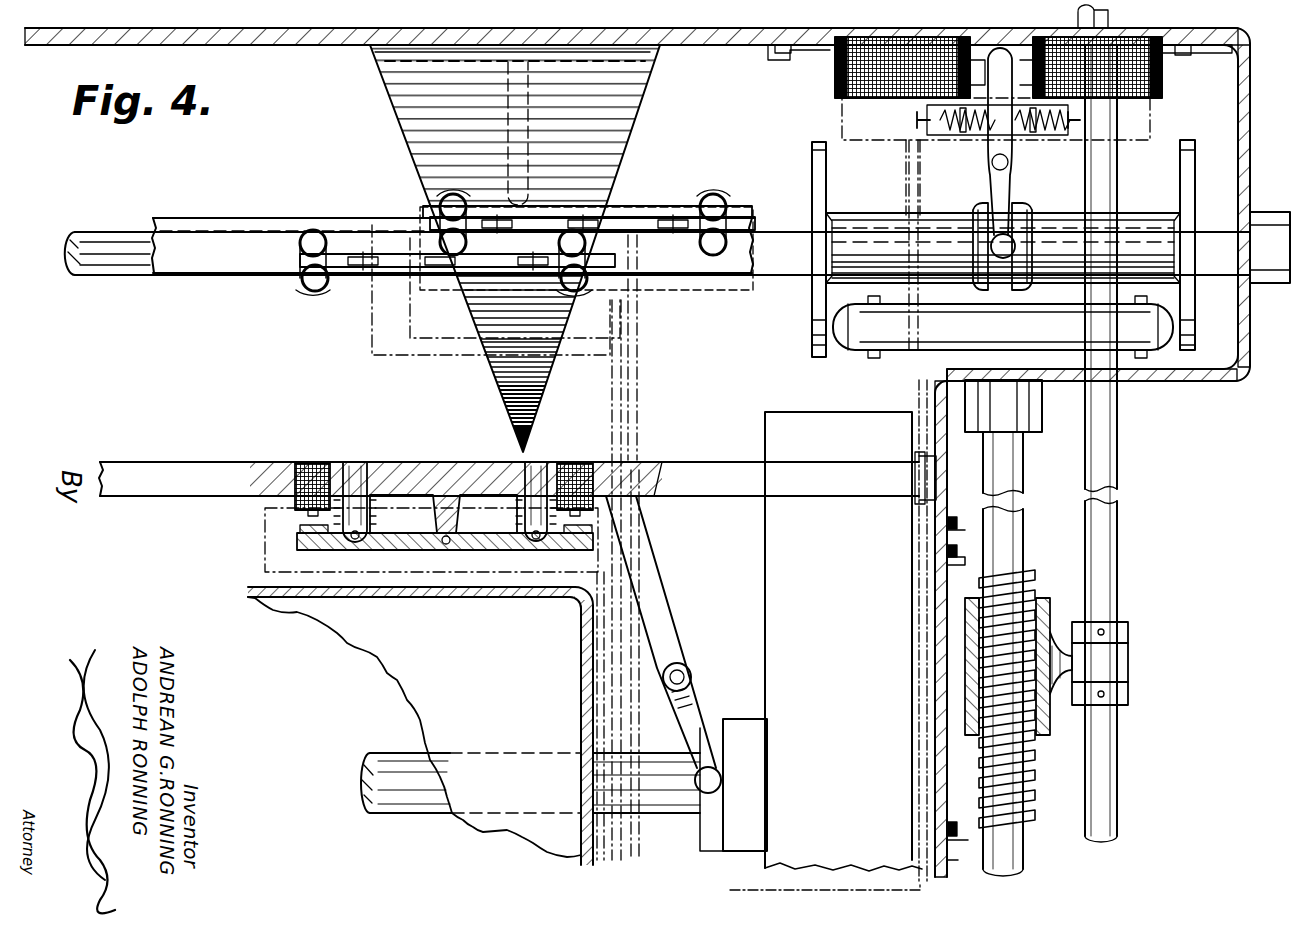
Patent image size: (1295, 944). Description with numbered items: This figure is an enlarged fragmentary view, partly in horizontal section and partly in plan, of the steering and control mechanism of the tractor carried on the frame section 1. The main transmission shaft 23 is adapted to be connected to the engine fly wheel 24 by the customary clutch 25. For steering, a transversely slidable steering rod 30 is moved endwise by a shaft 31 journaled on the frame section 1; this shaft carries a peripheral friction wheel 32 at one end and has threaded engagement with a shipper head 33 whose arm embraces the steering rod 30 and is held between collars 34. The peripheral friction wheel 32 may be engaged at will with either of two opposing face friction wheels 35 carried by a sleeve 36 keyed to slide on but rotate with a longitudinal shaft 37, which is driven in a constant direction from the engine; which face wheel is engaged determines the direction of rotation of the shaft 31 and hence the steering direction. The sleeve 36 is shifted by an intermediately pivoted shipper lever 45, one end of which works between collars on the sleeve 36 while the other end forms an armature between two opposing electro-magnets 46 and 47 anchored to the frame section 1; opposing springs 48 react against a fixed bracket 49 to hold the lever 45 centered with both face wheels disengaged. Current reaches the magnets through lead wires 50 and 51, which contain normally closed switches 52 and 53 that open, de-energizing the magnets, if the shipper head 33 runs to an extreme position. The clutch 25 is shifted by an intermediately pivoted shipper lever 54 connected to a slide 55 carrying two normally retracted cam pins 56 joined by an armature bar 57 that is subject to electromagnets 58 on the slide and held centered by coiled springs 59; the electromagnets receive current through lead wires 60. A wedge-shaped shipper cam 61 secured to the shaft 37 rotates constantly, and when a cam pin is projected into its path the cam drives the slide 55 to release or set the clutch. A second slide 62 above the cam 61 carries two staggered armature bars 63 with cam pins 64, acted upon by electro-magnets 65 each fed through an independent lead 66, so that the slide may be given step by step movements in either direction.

The upper frame section 1 is at (1183, 382).
The main transmission shaft 23 is at (385, 795).
The engine fly wheel 24 is at (790, 563).
The clutch 25 is at (740, 735).
The steering rod 30 is at (1110, 812).
The shaft 31 is at (1014, 538).
The peripheral friction wheel 32 is at (875, 320).
The shipper head 33 is at (1112, 665).
The collars 34 is at (1128, 634).
The face friction wheels 35 is at (820, 188).
The sleeve 36 is at (872, 226).
The longitudinal shaft 37 is at (780, 243).
The shipper lever 45 is at (1010, 190).
The electro-magnet 46 is at (870, 62).
The electro-magnet 47 is at (1110, 70).
The opposing springs 48 is at (966, 128).
The fixed bracket 49 is at (926, 114).
The lead wire 50 is at (906, 152).
The lead wire 51 is at (920, 184).
The switch 52 is at (950, 850).
The switch 53 is at (952, 530).
The shipper lever 54 is at (668, 616).
The slide 55 is at (708, 482).
The cam pins 56 is at (358, 463).
The armature bar 57 is at (482, 542).
The electromagnets 58 is at (312, 463).
The coiled springs 59 is at (368, 514).
The lead wires 60 is at (582, 578).
The shipper cam 61 is at (415, 122).
The slide 62 is at (222, 257).
The armature bars 63 is at (637, 224).
The cam pins 64 is at (370, 254).
The electro-magnets 65 is at (452, 206).
The lead 66 is at (636, 332).